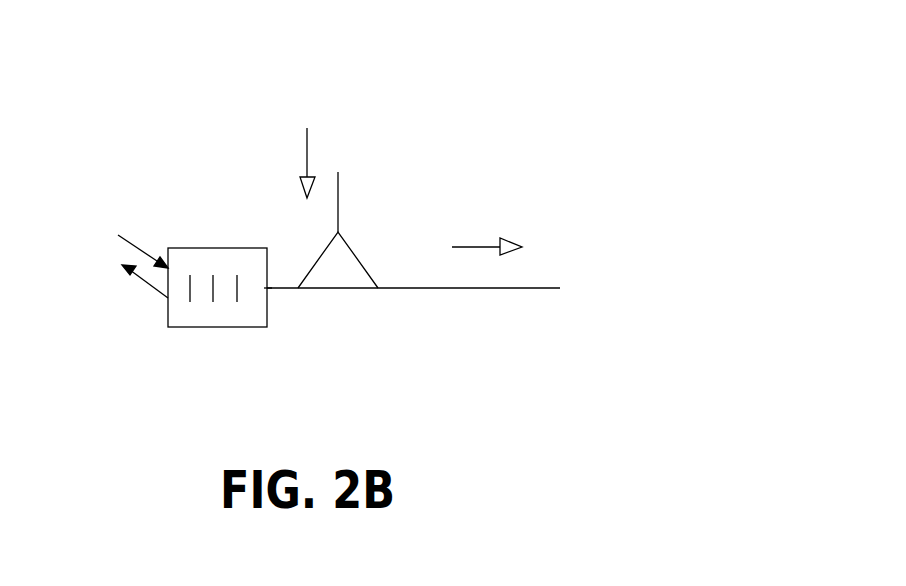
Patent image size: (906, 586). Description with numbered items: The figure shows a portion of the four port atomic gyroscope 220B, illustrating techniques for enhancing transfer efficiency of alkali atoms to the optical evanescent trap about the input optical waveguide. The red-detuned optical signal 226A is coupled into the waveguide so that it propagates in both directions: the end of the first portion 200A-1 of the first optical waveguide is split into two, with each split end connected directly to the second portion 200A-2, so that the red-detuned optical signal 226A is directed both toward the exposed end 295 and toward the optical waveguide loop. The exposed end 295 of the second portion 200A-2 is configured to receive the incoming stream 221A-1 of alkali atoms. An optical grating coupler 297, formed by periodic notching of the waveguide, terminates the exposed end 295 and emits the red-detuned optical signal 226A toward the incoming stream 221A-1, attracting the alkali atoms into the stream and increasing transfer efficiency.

The four port atomic gyroscope 220B is at (330, 43).
The stream of alkali atoms 221A-1 is at (142, 248).
The red-detuned optical signal 226A is at (145, 282).
The first portion of the first optical waveguide 200A-1 is at (338, 207).
The second portion of the first optical waveguide 200A-2 is at (357, 288).
The exposed end 295 is at (267, 288).
The optical grating coupler 297 is at (197, 327).